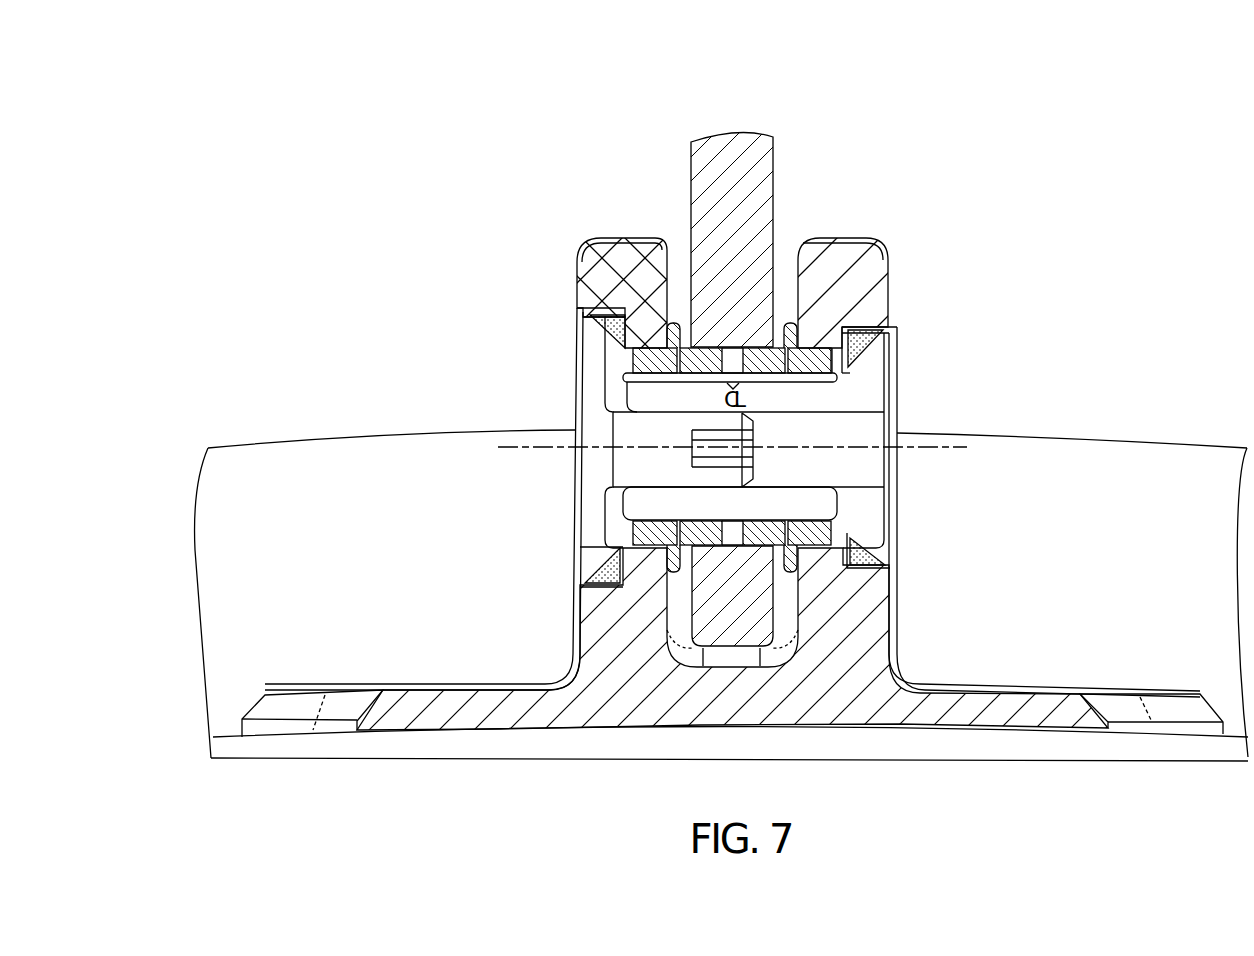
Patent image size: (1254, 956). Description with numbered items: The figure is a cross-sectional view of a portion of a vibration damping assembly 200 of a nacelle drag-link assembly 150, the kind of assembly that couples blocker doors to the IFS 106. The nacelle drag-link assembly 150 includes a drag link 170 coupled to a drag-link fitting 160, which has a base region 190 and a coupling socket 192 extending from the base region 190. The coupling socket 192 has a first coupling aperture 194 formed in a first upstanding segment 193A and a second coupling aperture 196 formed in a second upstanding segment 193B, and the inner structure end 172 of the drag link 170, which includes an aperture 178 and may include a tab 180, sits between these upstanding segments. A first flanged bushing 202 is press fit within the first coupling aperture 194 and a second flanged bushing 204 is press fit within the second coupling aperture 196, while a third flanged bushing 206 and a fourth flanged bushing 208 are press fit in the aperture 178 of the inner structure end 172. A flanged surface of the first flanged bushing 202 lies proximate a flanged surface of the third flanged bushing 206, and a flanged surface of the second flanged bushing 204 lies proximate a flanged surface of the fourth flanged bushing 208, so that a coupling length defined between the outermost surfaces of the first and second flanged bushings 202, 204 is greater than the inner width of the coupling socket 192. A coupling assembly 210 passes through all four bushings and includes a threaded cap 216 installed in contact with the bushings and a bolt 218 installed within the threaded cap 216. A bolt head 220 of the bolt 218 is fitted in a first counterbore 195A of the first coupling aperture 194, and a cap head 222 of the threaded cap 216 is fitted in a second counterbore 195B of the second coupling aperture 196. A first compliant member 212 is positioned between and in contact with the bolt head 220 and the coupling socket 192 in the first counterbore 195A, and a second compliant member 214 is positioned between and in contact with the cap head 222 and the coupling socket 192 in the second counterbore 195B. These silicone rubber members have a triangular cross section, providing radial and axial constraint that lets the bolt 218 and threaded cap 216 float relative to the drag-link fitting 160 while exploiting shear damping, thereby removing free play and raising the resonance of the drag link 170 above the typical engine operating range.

The IFS 106 is at (223, 738).
The nacelle drag-link assembly 150 is at (732, 366).
The drag-link fitting 160 is at (732, 502).
The drag link 170 is at (787, 230).
The inner structure end 172 is at (775, 158).
The aperture 178 is at (768, 538).
The tab 180 is at (764, 630).
The base region 190 is at (732, 678).
The coupling socket 192 is at (875, 275).
The first upstanding segment 193A is at (670, 267).
The second upstanding segment 193B is at (879, 258).
The first coupling aperture 194 is at (548, 393).
The first counterbore 195A is at (590, 317).
The second counterbore 195B is at (880, 345).
The second coupling aperture 196 is at (938, 537).
The vibration damping assembly 200 is at (670, 695).
The first flanged bushing 202 is at (657, 360).
The second flanged bushing 204 is at (760, 360).
The third flanged bushing 206 is at (695, 360).
The fourth flanged bushing 208 is at (627, 240).
The coupling assembly 210 is at (921, 408).
The first compliant member 212 is at (596, 557).
The second compliant member 214 is at (879, 558).
The threaded cap 216 is at (862, 503).
The bolt 218 is at (640, 460).
The bolt head 220 is at (600, 385).
The cap head 222 is at (890, 385).